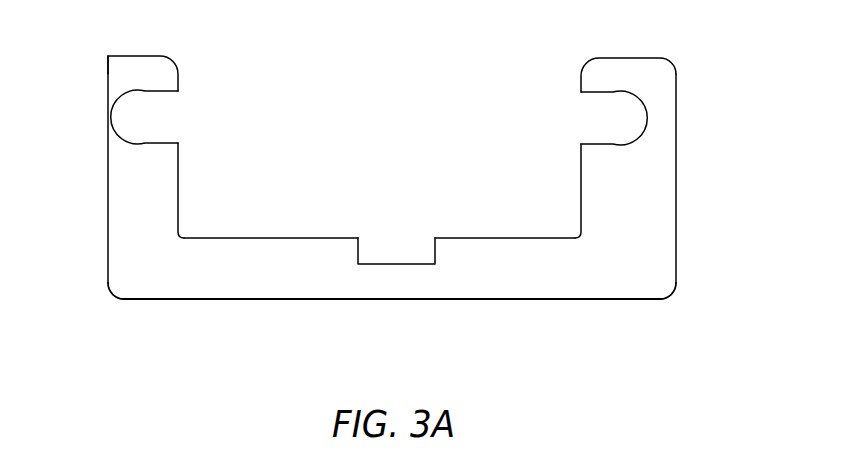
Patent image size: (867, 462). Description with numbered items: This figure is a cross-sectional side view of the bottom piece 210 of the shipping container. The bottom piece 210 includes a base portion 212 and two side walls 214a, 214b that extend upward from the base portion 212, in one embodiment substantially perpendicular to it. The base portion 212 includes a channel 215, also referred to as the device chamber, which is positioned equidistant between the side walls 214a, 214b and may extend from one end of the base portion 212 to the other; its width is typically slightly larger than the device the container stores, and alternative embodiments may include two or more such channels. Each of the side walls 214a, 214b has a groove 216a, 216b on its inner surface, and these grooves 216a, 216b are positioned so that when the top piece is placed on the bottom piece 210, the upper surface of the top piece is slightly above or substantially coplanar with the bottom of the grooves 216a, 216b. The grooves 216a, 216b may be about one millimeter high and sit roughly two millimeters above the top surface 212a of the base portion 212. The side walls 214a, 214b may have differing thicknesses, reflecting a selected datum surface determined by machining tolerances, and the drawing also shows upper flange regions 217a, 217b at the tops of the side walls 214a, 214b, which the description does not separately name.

The bottom piece 210 is at (722, 66).
The base portion 212 is at (372, 290).
The top surface of base portion 212a is at (270, 237).
The side wall 214a is at (676, 222).
The side wall 214b is at (113, 218).
The channel 215 is at (397, 263).
The groove 216a is at (590, 127).
The groove 216b is at (167, 123).
The first flange 217a is at (671, 60).
The second flange 217b is at (107, 56).